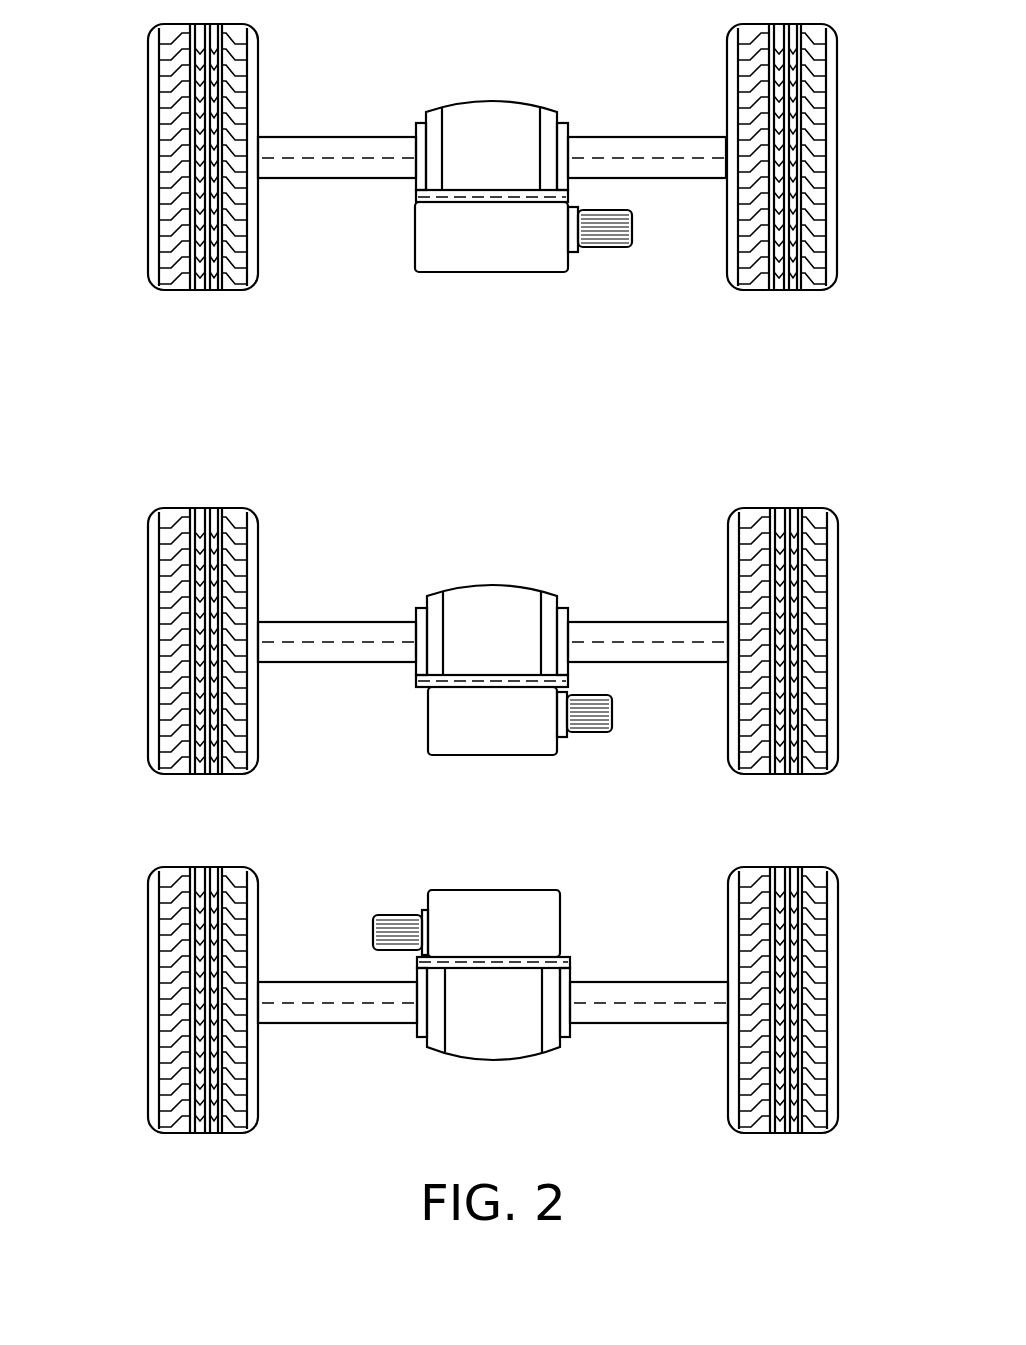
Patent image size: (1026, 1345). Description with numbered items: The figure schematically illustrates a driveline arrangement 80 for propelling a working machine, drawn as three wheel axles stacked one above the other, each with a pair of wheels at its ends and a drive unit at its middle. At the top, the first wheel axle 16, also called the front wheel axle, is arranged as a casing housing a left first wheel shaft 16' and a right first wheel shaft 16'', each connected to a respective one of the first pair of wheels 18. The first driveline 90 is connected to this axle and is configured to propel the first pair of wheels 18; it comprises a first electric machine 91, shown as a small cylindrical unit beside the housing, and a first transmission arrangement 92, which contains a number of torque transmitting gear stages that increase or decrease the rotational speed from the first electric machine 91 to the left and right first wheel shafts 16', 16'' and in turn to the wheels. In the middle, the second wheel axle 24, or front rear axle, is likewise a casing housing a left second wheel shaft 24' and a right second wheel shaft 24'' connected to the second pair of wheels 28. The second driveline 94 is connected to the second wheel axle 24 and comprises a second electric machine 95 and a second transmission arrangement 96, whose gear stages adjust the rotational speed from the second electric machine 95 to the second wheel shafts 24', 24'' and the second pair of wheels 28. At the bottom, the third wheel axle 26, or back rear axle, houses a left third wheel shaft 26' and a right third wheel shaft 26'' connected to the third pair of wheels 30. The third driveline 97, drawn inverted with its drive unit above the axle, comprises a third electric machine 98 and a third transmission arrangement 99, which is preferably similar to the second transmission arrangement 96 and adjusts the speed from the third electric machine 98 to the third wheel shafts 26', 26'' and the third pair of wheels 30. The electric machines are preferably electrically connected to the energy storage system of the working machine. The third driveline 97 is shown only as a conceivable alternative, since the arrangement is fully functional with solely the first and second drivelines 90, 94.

The driveline arrangement 80 is at (138, 385).
The first pair of wheels 18 is at (170, 133).
The left first wheel shaft 16' is at (337, 121).
The first wheel axle 16 is at (647, 121).
The right first wheel shaft 16'' is at (648, 111).
The first driveline 90 is at (542, 167).
The first transmission arrangement 92 is at (493, 238).
The first electric machine 91 is at (608, 247).
The second pair of wheels 28 is at (165, 618).
The left second wheel shaft 24' is at (337, 605).
The second wheel axle 24 is at (648, 605).
The right second wheel shaft 24'' is at (649, 595).
The second driveline 94 is at (531, 650).
The second transmission arrangement 96 is at (488, 720).
The second electric machine 95 is at (582, 732).
The third pair of wheels 30 is at (165, 978).
The left third wheel shaft 26' is at (337, 965).
The third wheel axle 26 is at (649, 965).
The right third wheel shaft 26'' is at (650, 955).
The third driveline 97 is at (511, 943).
The third transmission arrangement 99 is at (495, 923).
The third electric machine 98 is at (403, 910).